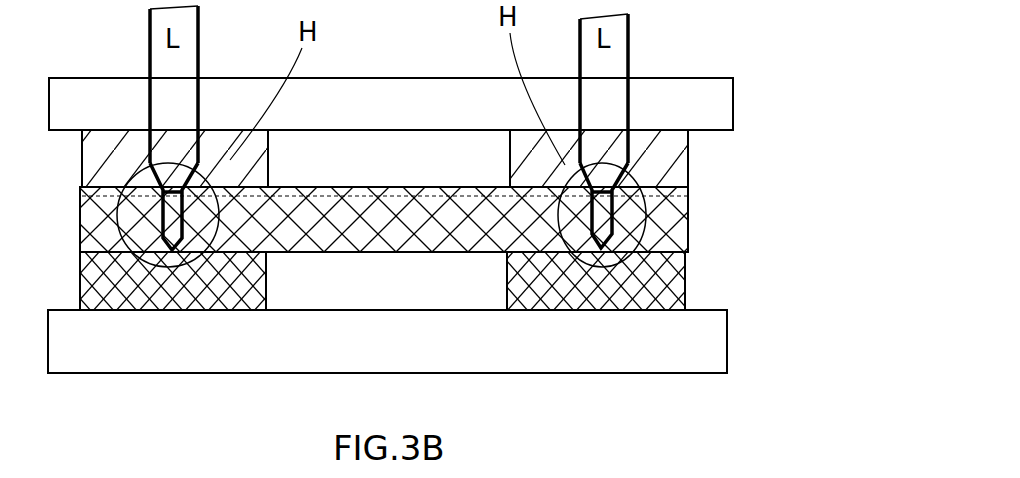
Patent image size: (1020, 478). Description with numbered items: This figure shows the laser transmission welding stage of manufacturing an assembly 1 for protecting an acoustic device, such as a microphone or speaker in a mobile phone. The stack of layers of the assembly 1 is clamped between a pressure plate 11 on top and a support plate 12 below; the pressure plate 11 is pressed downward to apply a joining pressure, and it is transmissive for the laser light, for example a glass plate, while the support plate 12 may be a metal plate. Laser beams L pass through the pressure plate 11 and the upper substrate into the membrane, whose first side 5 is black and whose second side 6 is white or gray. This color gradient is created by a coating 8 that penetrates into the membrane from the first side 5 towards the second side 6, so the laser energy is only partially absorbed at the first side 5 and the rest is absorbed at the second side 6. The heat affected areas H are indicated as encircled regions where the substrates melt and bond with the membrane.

The assembly 1 is at (806, 190).
The first side 5 is at (686, 190).
The second side 6 is at (684, 250).
The coating 8 is at (82, 188).
The pressure plate 11 is at (722, 98).
The support plate 12 is at (712, 357).